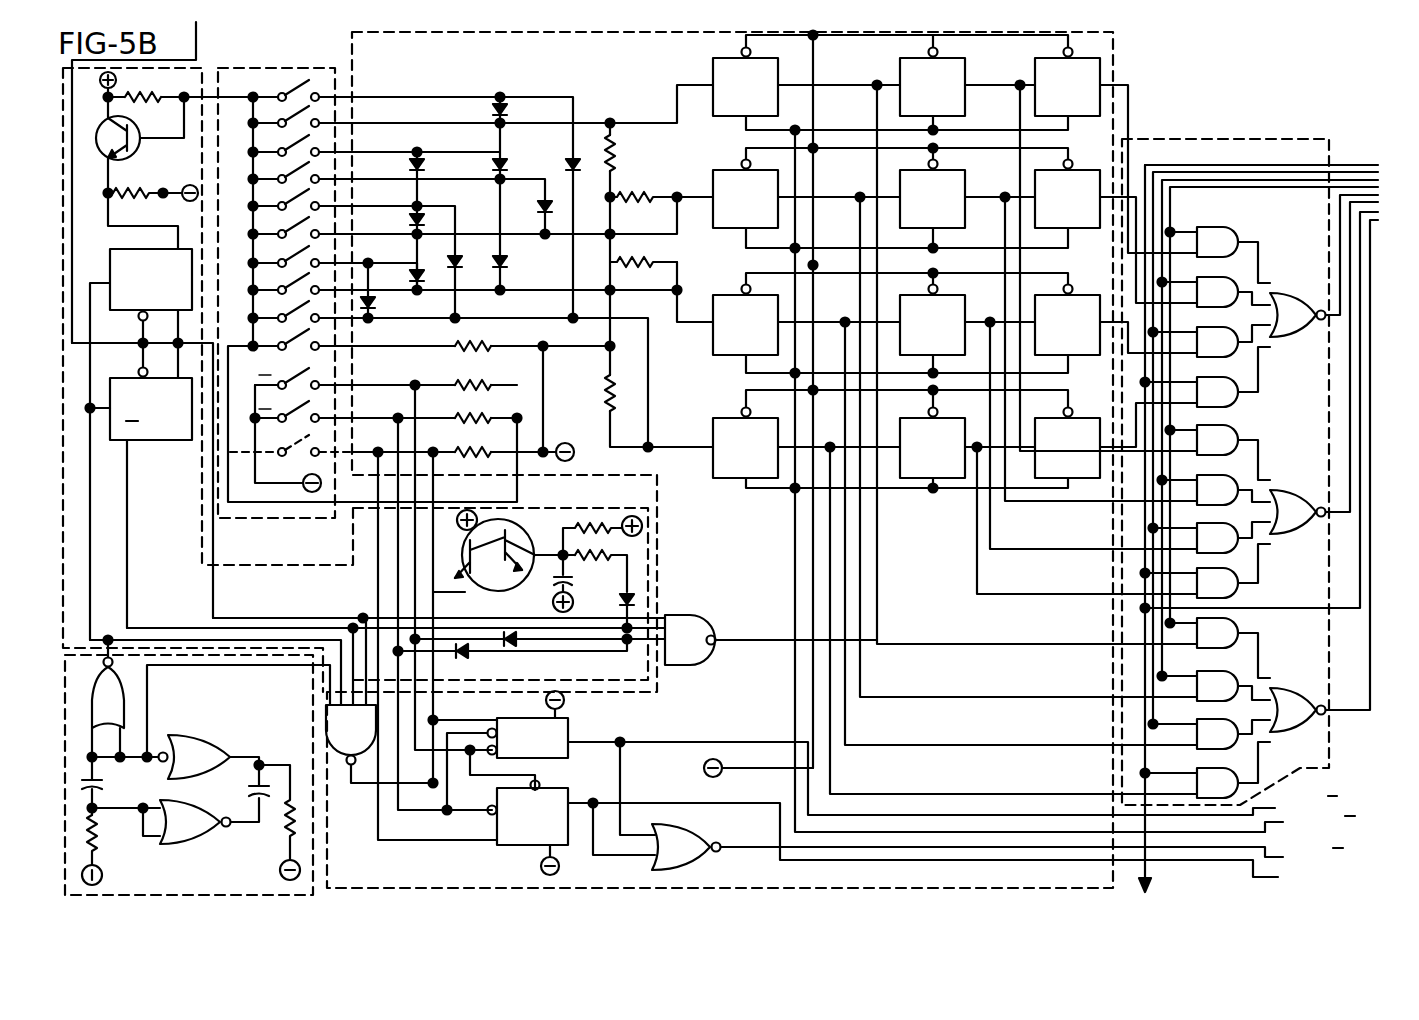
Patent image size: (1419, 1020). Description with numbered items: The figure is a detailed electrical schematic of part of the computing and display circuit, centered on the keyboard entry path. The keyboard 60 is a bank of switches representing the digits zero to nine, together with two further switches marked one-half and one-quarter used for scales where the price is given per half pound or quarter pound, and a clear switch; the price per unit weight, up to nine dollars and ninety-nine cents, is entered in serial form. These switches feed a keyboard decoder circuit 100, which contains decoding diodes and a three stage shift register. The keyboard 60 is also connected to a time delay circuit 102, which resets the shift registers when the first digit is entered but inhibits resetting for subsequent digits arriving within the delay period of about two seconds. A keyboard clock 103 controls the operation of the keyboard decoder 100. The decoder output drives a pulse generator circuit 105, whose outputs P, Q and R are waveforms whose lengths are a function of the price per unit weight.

The keyboard 60 is at (280, 68).
The keyboard decoder circuit 100 is at (588, 66).
The time delay circuit 102 is at (197, 68).
The keyboard clock 103 is at (232, 655).
The pulse generator circuit 105 is at (1274, 139).